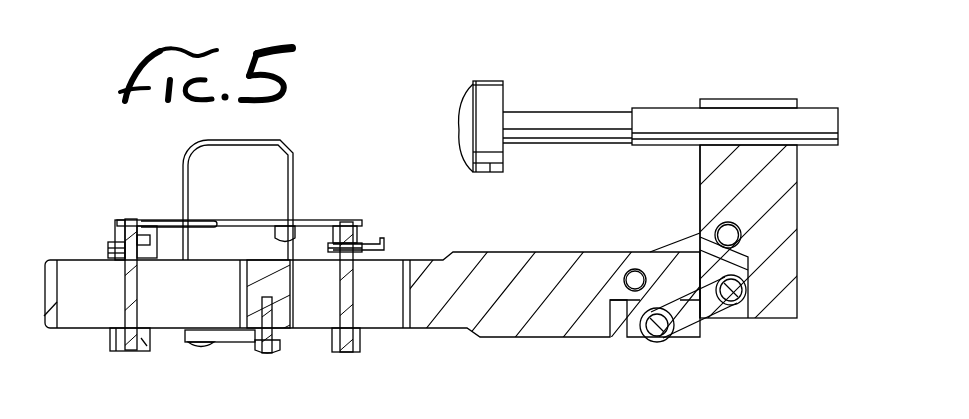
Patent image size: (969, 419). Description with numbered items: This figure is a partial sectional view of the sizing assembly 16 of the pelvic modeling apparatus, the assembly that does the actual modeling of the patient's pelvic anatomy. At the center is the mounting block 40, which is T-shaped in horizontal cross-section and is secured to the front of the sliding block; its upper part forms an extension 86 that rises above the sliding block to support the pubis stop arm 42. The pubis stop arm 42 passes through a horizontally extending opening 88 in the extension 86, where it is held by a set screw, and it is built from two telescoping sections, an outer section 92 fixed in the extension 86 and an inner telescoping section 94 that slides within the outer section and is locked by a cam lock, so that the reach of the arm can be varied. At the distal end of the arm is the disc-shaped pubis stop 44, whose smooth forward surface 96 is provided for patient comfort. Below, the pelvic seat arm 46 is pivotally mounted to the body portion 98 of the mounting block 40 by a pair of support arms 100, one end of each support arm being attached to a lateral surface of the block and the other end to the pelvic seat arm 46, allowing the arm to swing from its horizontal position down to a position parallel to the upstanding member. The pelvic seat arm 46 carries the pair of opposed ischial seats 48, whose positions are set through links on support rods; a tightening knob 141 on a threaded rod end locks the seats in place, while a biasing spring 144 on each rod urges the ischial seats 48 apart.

The sizing assembly 16 is at (626, 80).
The mounting block 40 is at (800, 300).
The pubis stop arm 42 is at (580, 112).
The pubis stop 44 is at (490, 171).
The pelvic seat arm 46 is at (432, 332).
The ischial seats 48 is at (270, 200).
The extension 86 is at (700, 152).
The horizontally extending opening 88 is at (743, 118).
The outer section 92 is at (682, 115).
The inner telescoping section 94 is at (556, 131).
The smooth forward surface 96 is at (459, 128).
The body portion 98 is at (770, 310).
The support arms 100 is at (690, 328).
The tightening knob 141 is at (115, 351).
The biasing spring 144 is at (373, 240).